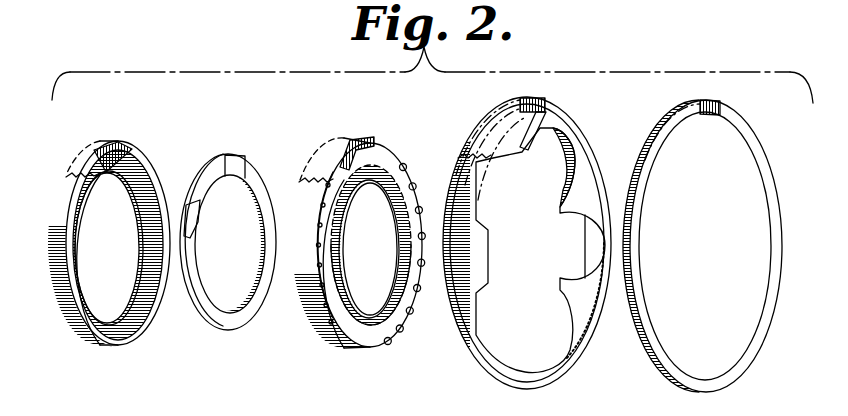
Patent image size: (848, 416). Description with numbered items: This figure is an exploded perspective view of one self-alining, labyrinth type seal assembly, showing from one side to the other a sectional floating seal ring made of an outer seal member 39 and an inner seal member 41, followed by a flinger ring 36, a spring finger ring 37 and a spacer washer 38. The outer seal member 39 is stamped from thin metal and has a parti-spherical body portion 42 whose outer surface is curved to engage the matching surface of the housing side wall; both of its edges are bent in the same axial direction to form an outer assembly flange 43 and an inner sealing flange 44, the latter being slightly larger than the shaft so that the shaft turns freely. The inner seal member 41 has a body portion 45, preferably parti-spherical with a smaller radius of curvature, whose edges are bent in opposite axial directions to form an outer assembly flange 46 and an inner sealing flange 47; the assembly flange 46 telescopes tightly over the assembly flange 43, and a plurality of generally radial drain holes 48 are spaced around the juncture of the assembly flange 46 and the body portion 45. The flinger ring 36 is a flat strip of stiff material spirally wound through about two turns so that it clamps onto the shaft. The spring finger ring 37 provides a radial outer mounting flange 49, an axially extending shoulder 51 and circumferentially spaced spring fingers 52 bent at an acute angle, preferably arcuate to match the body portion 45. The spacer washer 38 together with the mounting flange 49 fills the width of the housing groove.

The flinger ring 36 is at (240, 157).
The spring finger ring 37 is at (600, 141).
The spacer washer 38 is at (760, 148).
The outer seal member 39 is at (153, 148).
The inner seal member 41 is at (364, 131).
The parti-spherical body portion 42 is at (92, 152).
The outer assembly flange 43 is at (112, 143).
The inner sealing flange 44 is at (112, 308).
The body portion 45 is at (360, 165).
The outer assembly flange 46 is at (310, 323).
The inner sealing flange 47 is at (397, 268).
The drain holes 48 is at (319, 290).
The outer mounting flange 49 is at (528, 102).
The shoulder 51 is at (525, 125).
The spring fingers 52 is at (570, 182).